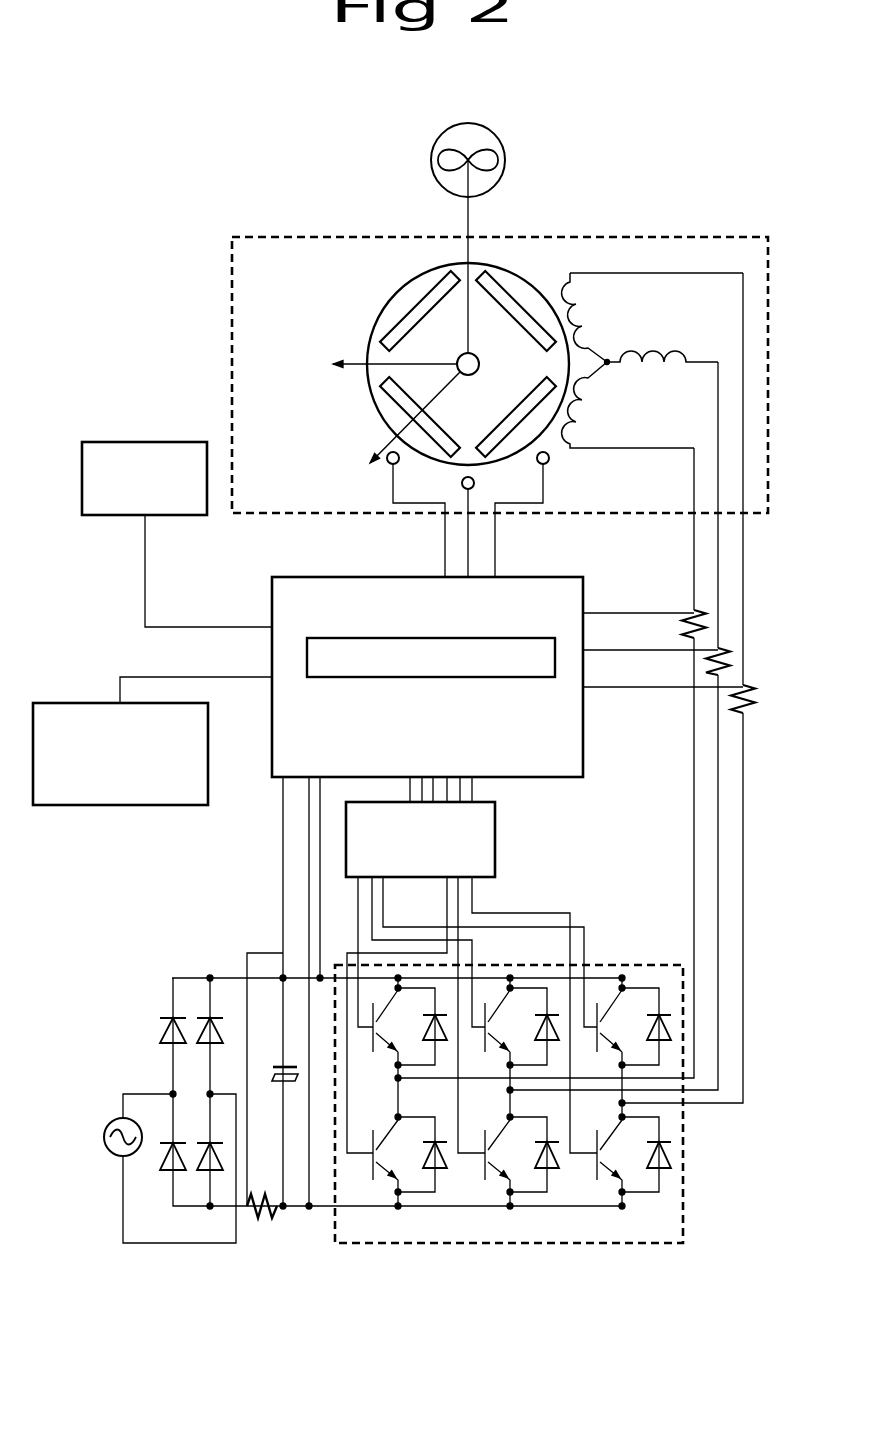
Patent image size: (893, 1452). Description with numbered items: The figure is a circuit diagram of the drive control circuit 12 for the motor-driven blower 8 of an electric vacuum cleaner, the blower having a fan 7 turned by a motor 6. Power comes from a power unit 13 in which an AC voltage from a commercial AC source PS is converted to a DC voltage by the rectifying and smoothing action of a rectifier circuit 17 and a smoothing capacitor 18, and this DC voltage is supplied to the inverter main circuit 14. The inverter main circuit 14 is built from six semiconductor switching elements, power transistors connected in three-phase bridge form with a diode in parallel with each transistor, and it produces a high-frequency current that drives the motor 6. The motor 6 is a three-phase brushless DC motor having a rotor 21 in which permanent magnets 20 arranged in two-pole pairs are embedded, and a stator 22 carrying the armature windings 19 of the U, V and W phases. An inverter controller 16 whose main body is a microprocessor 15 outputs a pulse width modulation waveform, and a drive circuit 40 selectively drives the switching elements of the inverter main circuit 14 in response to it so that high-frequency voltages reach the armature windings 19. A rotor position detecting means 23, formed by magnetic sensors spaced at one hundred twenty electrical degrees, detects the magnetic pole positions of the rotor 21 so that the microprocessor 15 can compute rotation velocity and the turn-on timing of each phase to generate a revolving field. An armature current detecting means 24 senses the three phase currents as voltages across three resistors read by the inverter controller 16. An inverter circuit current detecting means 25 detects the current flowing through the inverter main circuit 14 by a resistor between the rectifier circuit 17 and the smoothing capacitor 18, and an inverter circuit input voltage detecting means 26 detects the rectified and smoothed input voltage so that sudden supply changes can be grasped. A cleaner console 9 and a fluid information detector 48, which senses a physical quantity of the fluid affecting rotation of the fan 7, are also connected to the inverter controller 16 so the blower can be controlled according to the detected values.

The motor 6 is at (258, 237).
The fan 7 is at (447, 134).
The motor-driven blower 8 is at (203, 270).
The cleaner console 9 is at (95, 442).
The drive control circuit 12 is at (702, 1243).
The power unit 13 is at (142, 1250).
The inverter main circuit 14 is at (372, 1243).
The microprocessor 15 is at (557, 663).
The inverter controller 16 is at (520, 574).
The rectifier circuit 17 is at (148, 1017).
The smoothing capacitor 18 is at (296, 1082).
The armature windings 19 is at (682, 345).
The permanent magnets 20 is at (392, 390).
The rotor 21 is at (372, 388).
The stator 22 is at (640, 263).
The rotor position detecting means 23 is at (355, 522).
The armature current detecting means 24 is at (770, 682).
The inverter circuit current detecting means 25 is at (253, 1253).
The inverter circuit input voltage detecting means 26 is at (281, 787).
The drive circuit 40 is at (496, 848).
The fluid information detector 48 is at (70, 703).
The commercial AC source PS is at (100, 1133).